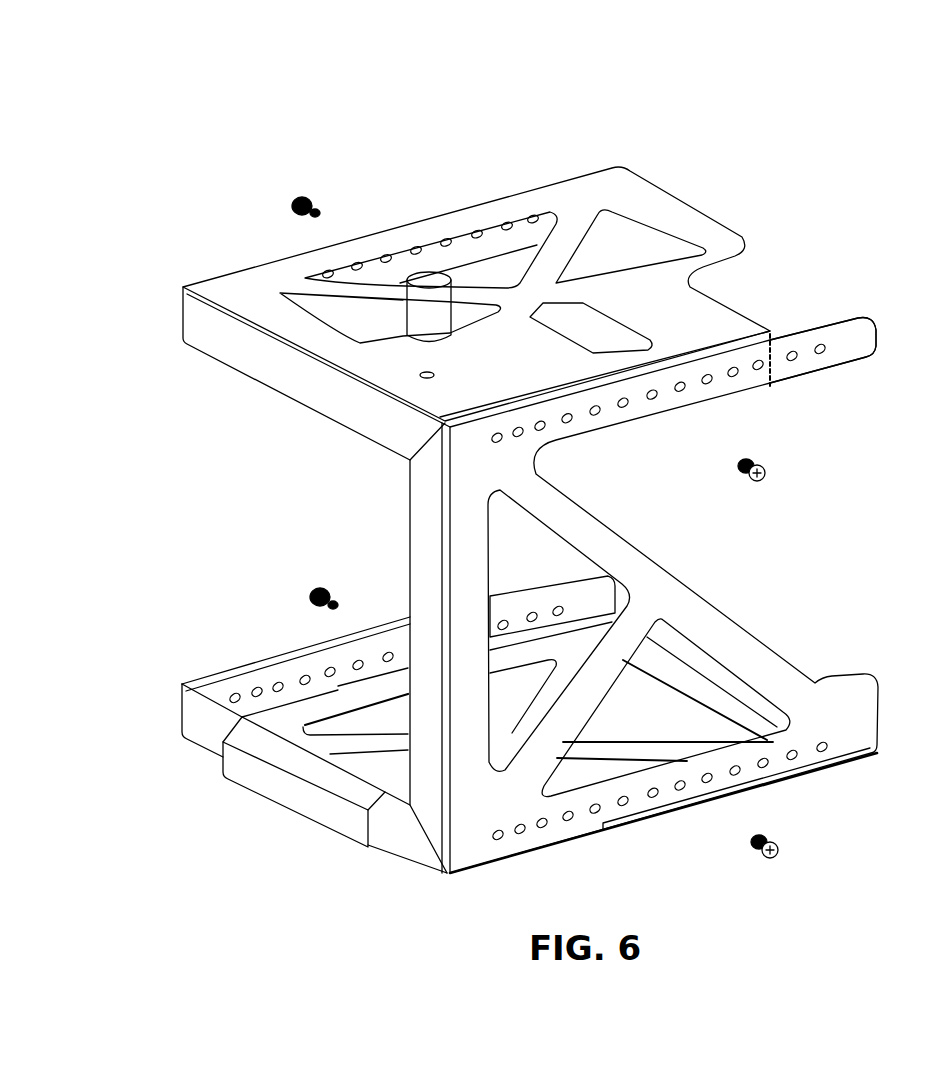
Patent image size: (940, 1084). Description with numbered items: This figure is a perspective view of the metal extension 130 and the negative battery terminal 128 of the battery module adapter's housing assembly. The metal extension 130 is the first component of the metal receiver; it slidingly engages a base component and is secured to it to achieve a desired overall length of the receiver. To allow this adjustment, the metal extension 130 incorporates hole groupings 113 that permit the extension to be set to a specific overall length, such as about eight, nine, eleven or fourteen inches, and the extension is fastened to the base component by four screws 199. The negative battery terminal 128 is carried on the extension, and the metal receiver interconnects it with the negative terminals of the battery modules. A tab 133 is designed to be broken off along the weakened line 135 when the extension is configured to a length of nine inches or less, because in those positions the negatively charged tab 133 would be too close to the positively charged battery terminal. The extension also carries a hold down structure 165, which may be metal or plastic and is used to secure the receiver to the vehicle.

The hole groupings 113 is at (392, 262).
The negative battery terminal 128 is at (433, 272).
The metal extension 130 is at (255, 287).
The tab 133 is at (838, 345).
The weakened line 135 is at (770, 386).
The hold down structures 165 is at (288, 788).
The screws 199 is at (296, 196).